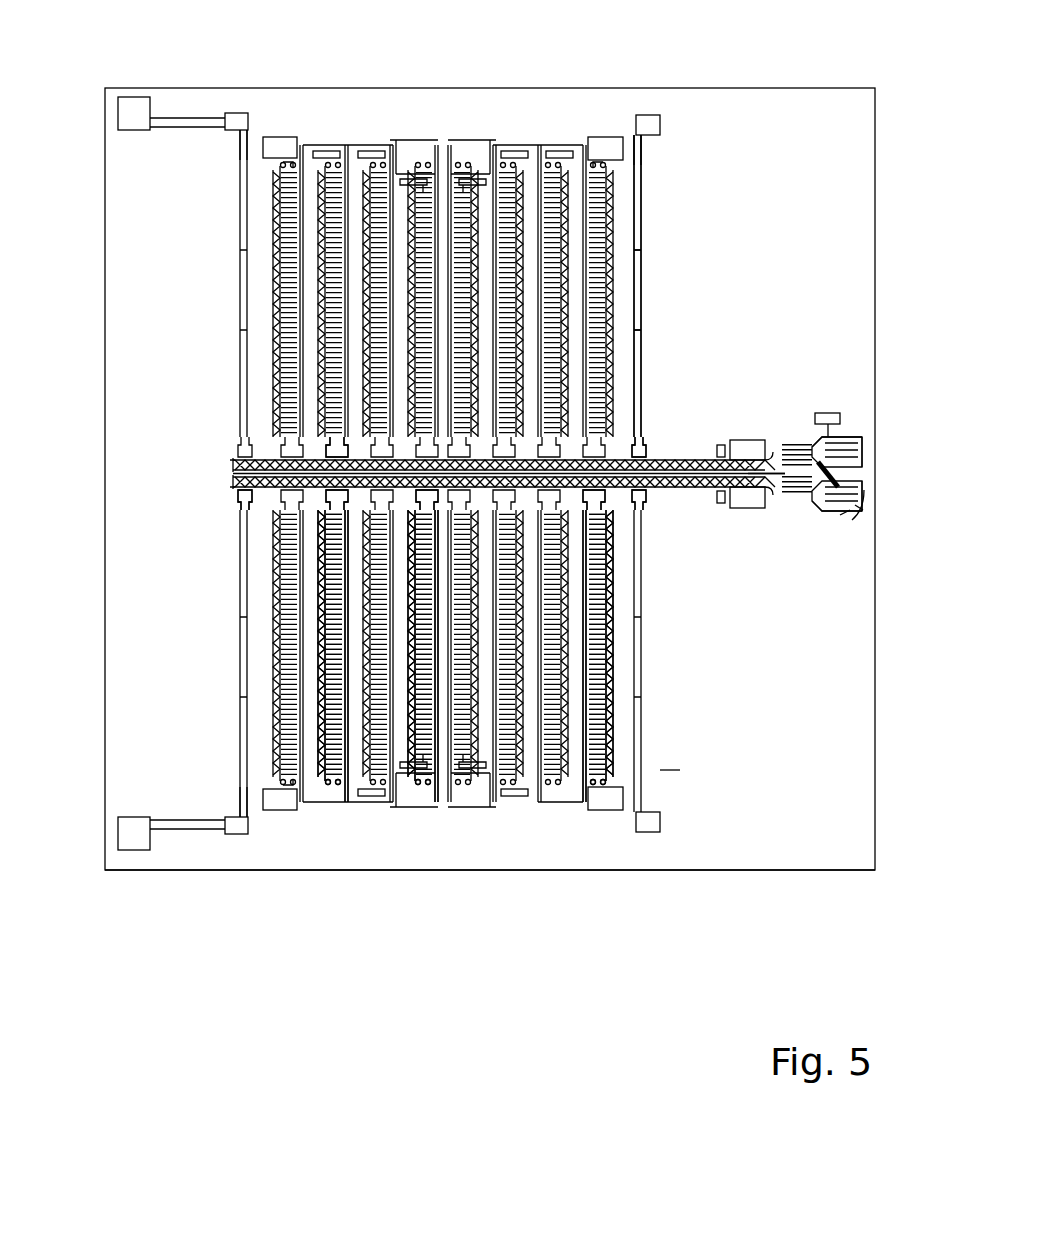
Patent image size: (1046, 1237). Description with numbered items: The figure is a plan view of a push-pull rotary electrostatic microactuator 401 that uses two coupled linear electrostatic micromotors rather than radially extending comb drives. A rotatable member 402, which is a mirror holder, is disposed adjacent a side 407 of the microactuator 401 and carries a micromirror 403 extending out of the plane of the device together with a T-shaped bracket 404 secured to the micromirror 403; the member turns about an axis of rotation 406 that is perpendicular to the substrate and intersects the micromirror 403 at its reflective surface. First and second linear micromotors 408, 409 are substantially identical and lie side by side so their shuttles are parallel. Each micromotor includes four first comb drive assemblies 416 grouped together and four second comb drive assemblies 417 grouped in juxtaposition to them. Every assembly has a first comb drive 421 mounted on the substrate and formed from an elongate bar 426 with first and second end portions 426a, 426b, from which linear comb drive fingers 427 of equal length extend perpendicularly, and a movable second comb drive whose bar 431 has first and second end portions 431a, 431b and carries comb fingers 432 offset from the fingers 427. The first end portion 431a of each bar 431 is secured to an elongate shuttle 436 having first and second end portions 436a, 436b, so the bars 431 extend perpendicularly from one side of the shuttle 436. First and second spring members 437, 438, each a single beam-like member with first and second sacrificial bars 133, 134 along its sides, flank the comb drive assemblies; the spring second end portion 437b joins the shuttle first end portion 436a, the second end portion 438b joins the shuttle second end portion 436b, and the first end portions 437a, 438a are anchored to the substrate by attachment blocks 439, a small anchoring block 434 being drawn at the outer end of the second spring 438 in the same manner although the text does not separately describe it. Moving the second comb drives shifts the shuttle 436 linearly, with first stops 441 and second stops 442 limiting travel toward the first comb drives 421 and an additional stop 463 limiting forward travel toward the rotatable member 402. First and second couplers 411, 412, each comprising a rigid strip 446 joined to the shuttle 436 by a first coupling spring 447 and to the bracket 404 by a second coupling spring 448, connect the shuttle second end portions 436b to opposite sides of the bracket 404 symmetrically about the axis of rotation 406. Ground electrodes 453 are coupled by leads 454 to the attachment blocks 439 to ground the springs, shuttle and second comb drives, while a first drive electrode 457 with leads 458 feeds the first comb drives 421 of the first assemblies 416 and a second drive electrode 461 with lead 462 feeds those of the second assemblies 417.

The rotary electrostatic microactuator 401 is at (800, 62).
The rotatable member 402 is at (830, 490).
The micromirror 403 is at (838, 440).
The T-shaped bracket 404 is at (850, 520).
The axis of rotation 406 is at (820, 412).
The side 407 is at (835, 870).
The first linear micromotor 408 is at (690, 775).
The second linear micromotor 409 is at (733, 165).
The first coupler 411 is at (850, 522).
The second coupler 412 is at (818, 412).
The first comb drive assembly 416 is at (268, 268).
The second comb drive assembly 417 is at (622, 262).
The first comb drive 421 is at (352, 805).
The elongate bar 426 is at (355, 790).
The first end portion of bar 426a is at (360, 158).
The second end portion of bar 426b is at (330, 420).
The comb drive fingers 427 is at (338, 175).
The bar 431 is at (618, 300).
The first end portion of bar 431 431a is at (280, 510).
The second end portion of bar 431 431b is at (283, 765).
The comb fingers 432 is at (612, 178).
The right anchor 434 is at (660, 118).
The shuttle 436 is at (668, 458).
The first end portion of shuttle 436a is at (233, 463).
The second end portion of shuttle 436b is at (695, 505).
The first spring member 437 is at (242, 330).
The first end portion of first spring 437a is at (240, 150).
The second end portion of first spring 437b is at (245, 505).
The second spring member 438 is at (642, 272).
The first end portion of second spring 438a is at (645, 145).
The second end portion of second spring 438b is at (656, 505).
The attachment block 439 is at (245, 113).
The first stops 441 is at (390, 175).
The second stops 442 is at (500, 172).
The rigid strip 446 is at (810, 435).
The first coupling spring 447 is at (790, 447).
The second coupling spring 448 is at (860, 525).
The ground electrode 453 is at (130, 97).
The lead 454 is at (180, 117).
The first drive electrode 457 is at (405, 140).
The lead 458 is at (340, 150).
The second drive electrode 461 is at (478, 145).
The lead 462 is at (582, 146).
The additional stop 463 is at (740, 445).
The first sacrificial bar 133 is at (636, 350).
The second sacrificial bar 134 is at (641, 318).